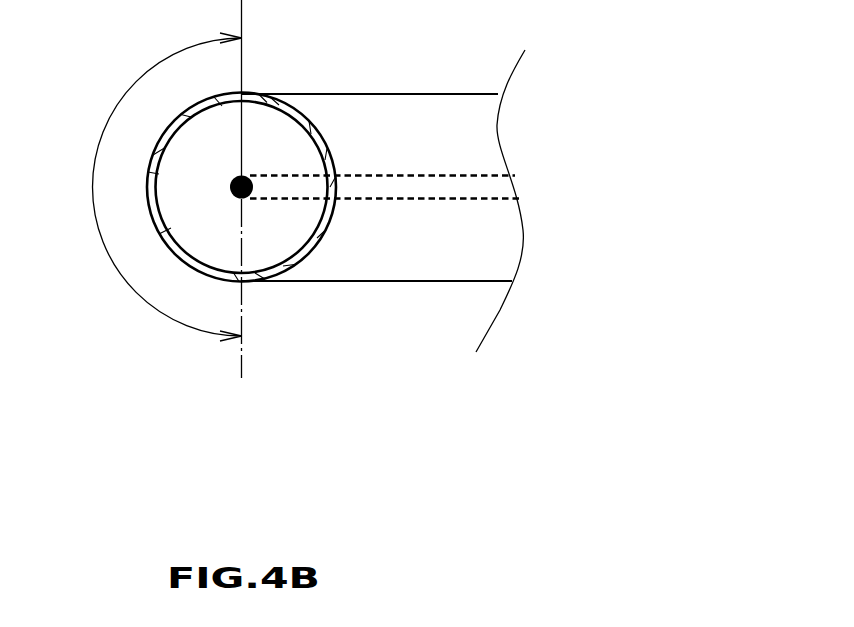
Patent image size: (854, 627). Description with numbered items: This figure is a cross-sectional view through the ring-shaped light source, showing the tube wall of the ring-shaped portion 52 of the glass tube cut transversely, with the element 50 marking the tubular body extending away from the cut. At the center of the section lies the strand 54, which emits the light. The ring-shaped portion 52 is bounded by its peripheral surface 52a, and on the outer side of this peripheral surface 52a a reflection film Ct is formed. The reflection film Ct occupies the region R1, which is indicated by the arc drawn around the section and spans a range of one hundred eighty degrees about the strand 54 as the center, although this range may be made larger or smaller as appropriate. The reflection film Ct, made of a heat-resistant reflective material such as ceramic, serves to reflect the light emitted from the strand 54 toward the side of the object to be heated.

The pipe 50 is at (405, 280).
The ring-shaped portion 52 is at (277, 100).
The peripheral surface 52a is at (153, 150).
The strand 54 is at (253, 188).
The region R1 is at (98, 147).
The reflection film Ct is at (213, 278).